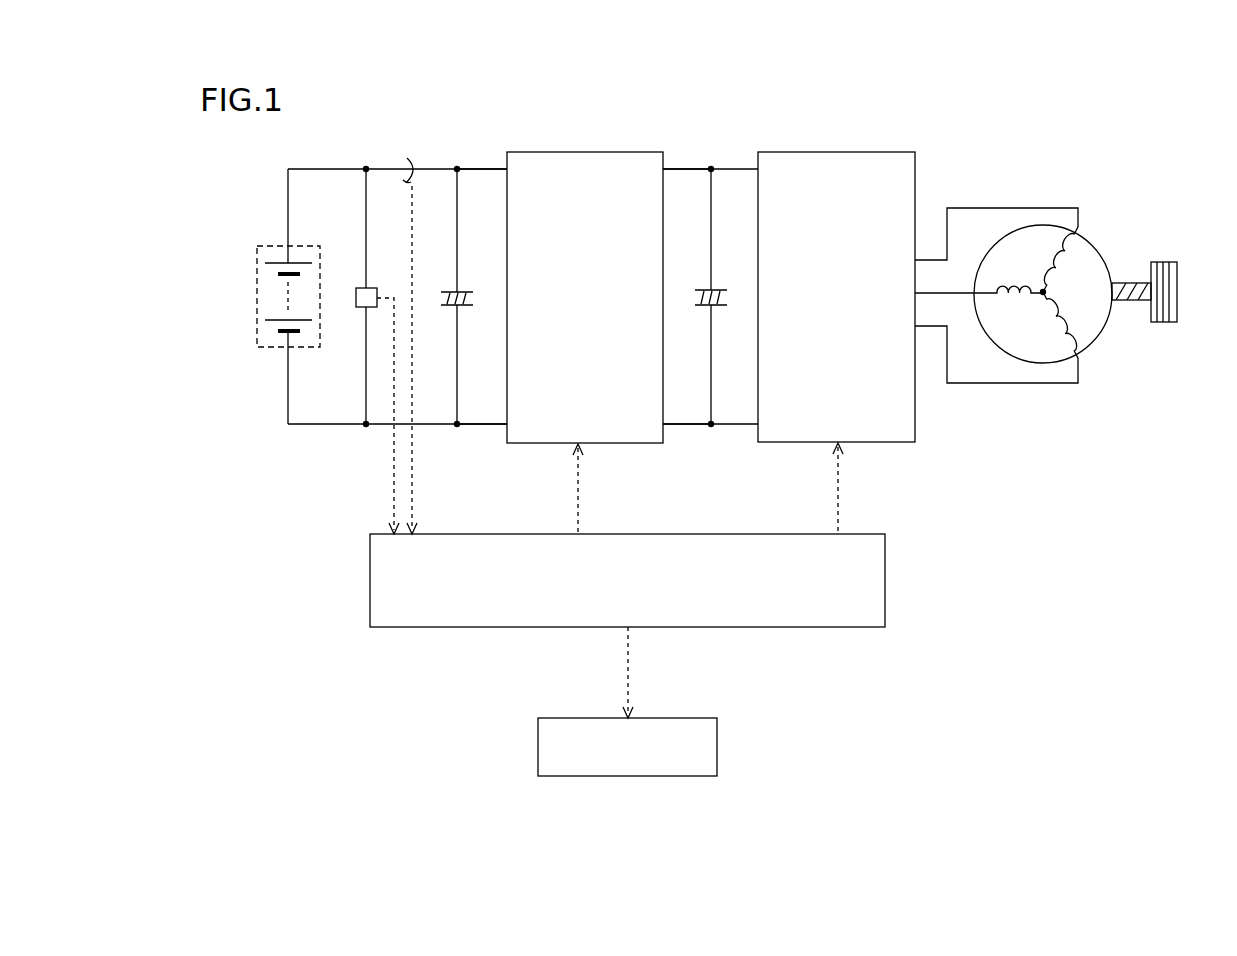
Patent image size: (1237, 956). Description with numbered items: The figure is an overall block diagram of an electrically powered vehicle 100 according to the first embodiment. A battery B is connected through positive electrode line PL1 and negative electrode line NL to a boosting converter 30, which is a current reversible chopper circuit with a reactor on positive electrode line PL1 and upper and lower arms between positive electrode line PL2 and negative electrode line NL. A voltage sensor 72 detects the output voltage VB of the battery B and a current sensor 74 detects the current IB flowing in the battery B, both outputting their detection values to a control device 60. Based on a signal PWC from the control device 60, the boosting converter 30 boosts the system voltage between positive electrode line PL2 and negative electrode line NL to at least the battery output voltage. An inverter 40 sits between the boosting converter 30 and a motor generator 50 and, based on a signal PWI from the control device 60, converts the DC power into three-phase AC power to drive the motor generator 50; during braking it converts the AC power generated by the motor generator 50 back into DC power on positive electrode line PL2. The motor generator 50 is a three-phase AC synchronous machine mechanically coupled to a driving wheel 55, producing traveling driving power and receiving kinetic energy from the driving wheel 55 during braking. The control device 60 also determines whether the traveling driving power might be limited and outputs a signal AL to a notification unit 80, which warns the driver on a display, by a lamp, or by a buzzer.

The battery B is at (273, 246).
The voltage sensor 72 is at (357, 289).
The current sensor 74 is at (412, 157).
The positive electrode line PL1 is at (486, 166).
The positive electrode line PL2 is at (689, 166).
The negative electrode line NL is at (487, 428).
The boosting converter 30 is at (597, 152).
The inverter 40 is at (845, 152).
The motor generator 50 is at (1096, 243).
The driving wheel 55 is at (1172, 263).
The electrically powered vehicle 100 is at (1082, 148).
The control device 60 is at (763, 534).
The notification unit 80 is at (672, 718).
The output voltage VB is at (376, 416).
The current IB is at (423, 360).
The signal PWC is at (602, 489).
The signal PWI is at (858, 488).
The signal AL is at (611, 672).